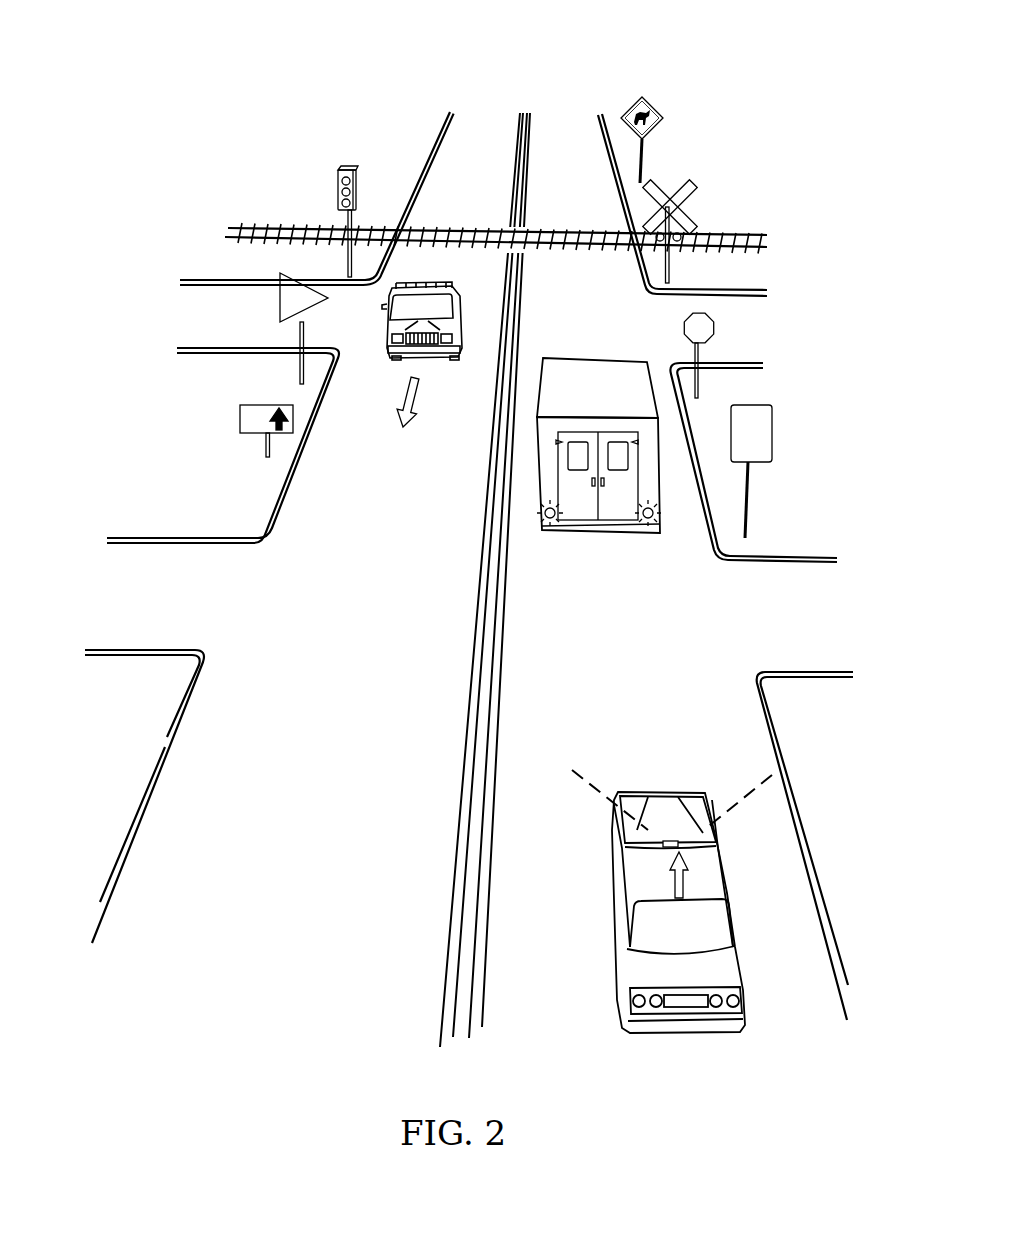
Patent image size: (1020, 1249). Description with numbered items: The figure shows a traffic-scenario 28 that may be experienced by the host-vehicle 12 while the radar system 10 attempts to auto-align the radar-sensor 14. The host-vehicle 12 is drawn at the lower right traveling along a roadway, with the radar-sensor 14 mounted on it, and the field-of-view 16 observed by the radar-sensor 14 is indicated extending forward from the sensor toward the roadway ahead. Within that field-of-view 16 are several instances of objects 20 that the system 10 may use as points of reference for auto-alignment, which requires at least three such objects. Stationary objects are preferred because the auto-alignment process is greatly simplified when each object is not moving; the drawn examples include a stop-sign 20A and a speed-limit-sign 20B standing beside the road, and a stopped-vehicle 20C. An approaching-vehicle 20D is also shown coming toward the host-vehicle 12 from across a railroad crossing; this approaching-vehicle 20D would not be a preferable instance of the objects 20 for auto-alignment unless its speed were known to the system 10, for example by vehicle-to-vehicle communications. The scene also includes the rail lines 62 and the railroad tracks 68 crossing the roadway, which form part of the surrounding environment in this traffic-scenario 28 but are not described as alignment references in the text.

The radar system 10 is at (706, 861).
The host-vehicle 12 is at (733, 957).
The radar-sensor 14 is at (670, 843).
The field-of-view 16 is at (757, 785).
The objects 20 is at (780, 155).
The stop-sign 20A is at (700, 312).
The speed-limit-sign 20B is at (757, 405).
The stopped-vehicle 20C is at (607, 380).
The approaching-vehicle 20D is at (437, 285).
The traffic-scenario 28 is at (583, 94).
The rail lines 62 is at (452, 952).
The railroad tracks 68 is at (712, 232).